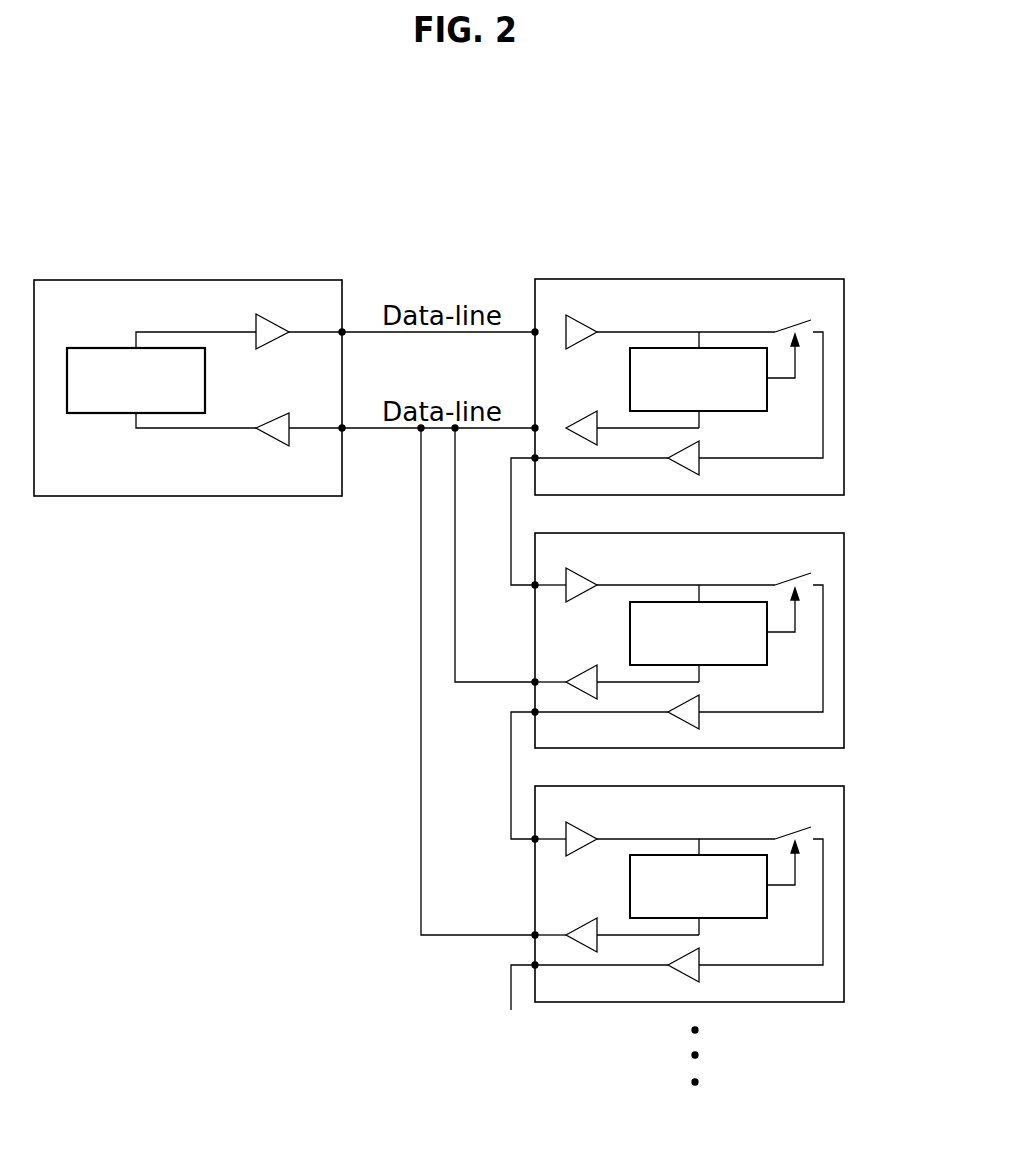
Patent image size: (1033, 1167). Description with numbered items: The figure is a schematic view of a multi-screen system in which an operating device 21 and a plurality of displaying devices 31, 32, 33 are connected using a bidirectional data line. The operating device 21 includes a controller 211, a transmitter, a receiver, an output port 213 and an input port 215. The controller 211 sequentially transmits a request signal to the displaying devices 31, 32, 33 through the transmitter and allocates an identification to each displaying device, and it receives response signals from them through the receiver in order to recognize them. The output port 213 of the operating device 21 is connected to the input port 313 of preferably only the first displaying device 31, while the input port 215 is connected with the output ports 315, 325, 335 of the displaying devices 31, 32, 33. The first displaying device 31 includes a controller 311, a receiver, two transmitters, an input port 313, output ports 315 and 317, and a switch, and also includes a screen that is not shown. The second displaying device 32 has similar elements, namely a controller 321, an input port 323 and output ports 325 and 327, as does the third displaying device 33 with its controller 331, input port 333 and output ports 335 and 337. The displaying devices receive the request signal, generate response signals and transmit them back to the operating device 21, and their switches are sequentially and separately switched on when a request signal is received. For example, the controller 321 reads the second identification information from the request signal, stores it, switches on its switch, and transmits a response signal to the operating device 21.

The operating device 21 is at (186, 278).
The controller 211 is at (115, 413).
The output port 213 is at (342, 333).
The input port 215 is at (342, 429).
The first displaying device 31 is at (844, 348).
The controller 311 is at (757, 398).
The input port 313 is at (533, 334).
The output port 315 is at (533, 430).
The output port 317 is at (535, 459).
The second displaying device 32 is at (844, 602).
The controller 321 is at (757, 652).
The input port 323 is at (533, 588).
The output port 325 is at (533, 684).
The output port 327 is at (535, 713).
The third displaying device 33 is at (844, 856).
The controller 331 is at (757, 906).
The input port 333 is at (533, 840).
The output port 335 is at (533, 937).
The output port 337 is at (535, 966).